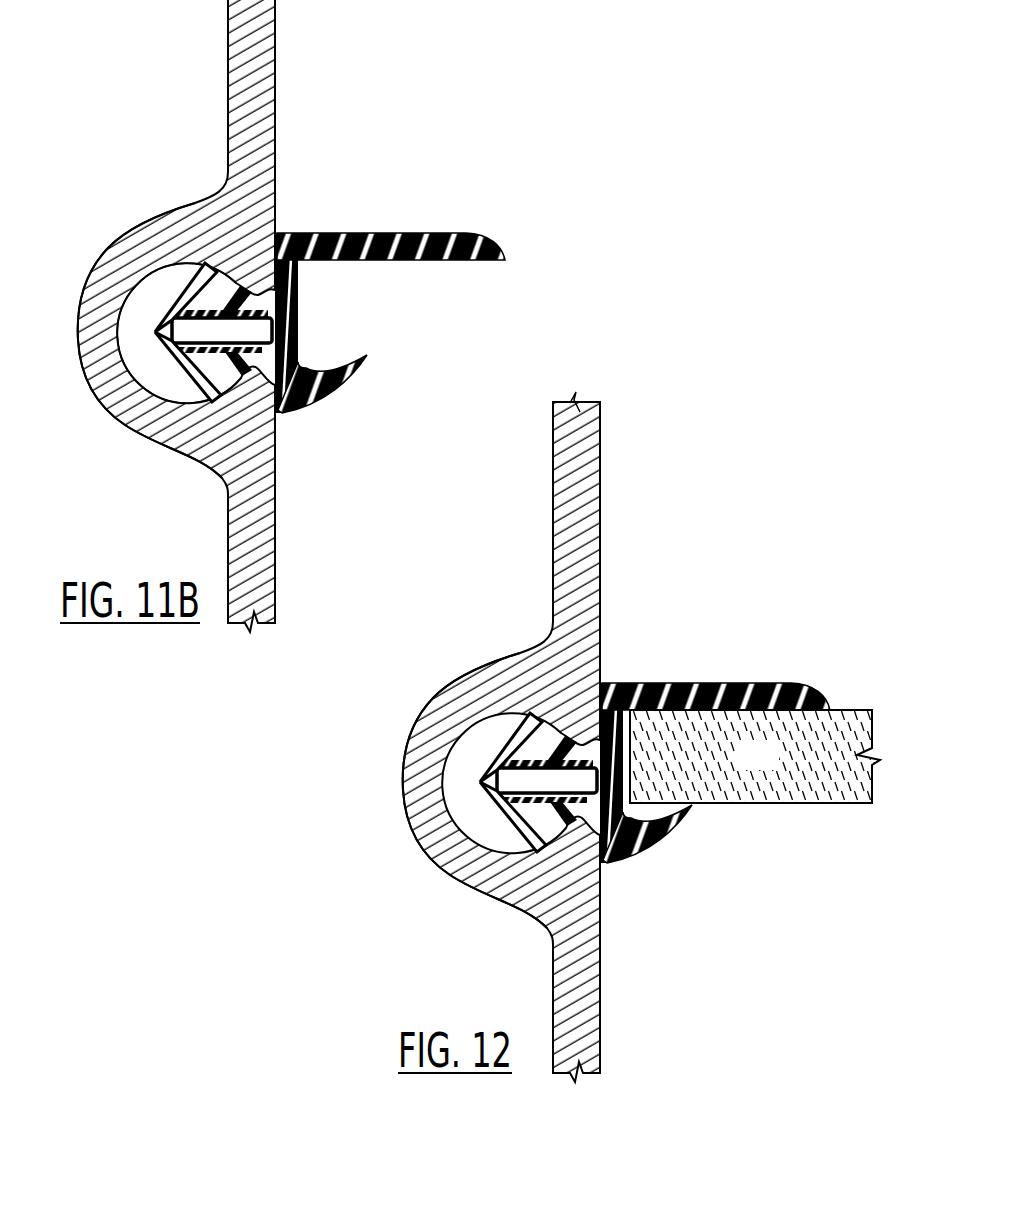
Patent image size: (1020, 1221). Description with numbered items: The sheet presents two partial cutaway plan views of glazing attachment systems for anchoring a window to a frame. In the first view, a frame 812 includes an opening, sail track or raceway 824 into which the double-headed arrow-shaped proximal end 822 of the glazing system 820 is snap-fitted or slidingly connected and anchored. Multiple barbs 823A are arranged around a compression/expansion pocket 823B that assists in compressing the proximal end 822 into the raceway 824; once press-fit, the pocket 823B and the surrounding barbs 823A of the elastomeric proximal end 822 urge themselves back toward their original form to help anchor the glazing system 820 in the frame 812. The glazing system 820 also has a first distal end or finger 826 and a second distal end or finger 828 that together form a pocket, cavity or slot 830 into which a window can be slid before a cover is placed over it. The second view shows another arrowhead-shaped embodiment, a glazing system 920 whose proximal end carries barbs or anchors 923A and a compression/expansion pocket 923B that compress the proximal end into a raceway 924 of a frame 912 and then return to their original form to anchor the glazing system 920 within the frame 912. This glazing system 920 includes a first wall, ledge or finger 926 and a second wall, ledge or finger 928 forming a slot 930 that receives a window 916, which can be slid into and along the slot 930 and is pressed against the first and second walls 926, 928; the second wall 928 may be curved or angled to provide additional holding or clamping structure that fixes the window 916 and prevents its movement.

In FIG. 11B, the frame 812 is at (247, 80).
In FIG. 11B, the glazing system 820 is at (330, 376).
In FIG. 11B, the proximal end 822 is at (155, 332).
In FIG. 11B, the barbs 823A is at (198, 358).
In FIG. 11B, the compression/expansion pocket 823B is at (300, 306).
In FIG. 11B, the raceway 824 is at (172, 288).
In FIG. 11B, the first finger 826 is at (320, 405).
In FIG. 11B, the second finger 828 is at (402, 256).
In FIG. 11B, the slot 830 is at (325, 327).
In FIG. 12, the frame 912 is at (573, 527).
In FIG. 12, the window 916 is at (776, 768).
In FIG. 12, the glazing system 920 is at (602, 759).
In FIG. 12, the barbs 923A is at (493, 800).
In FIG. 12, the compression/expansion pocket 923B is at (609, 870).
In FIG. 12, the raceway 924 is at (488, 818).
In FIG. 12, the first wall 926 is at (735, 683).
In FIG. 12, the second wall 928 is at (647, 852).
In FIG. 12, the slot 930 is at (648, 810).